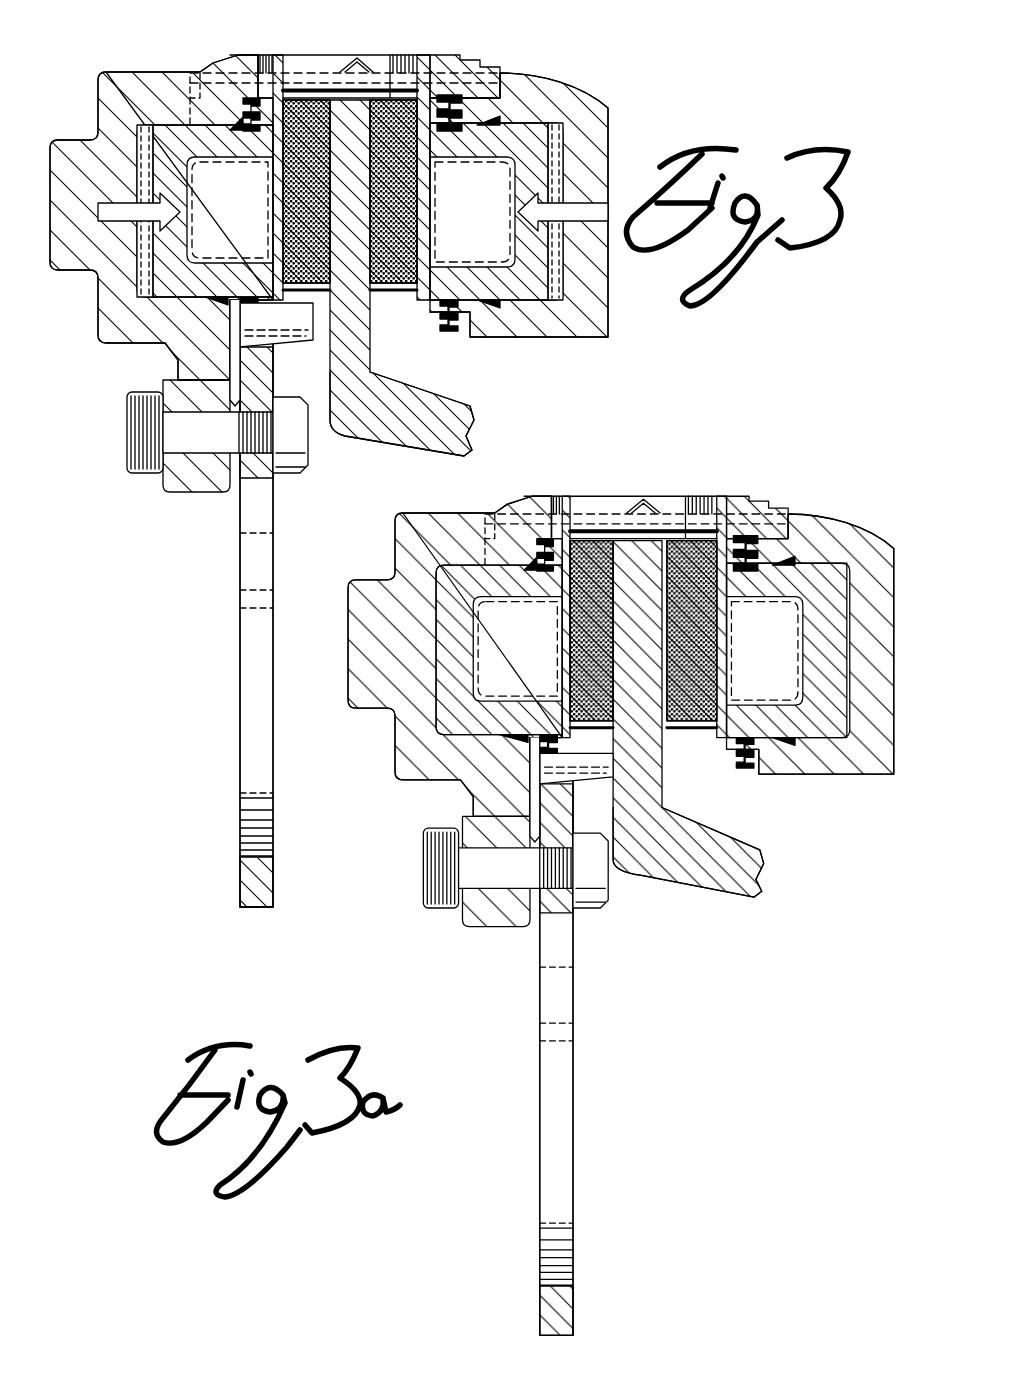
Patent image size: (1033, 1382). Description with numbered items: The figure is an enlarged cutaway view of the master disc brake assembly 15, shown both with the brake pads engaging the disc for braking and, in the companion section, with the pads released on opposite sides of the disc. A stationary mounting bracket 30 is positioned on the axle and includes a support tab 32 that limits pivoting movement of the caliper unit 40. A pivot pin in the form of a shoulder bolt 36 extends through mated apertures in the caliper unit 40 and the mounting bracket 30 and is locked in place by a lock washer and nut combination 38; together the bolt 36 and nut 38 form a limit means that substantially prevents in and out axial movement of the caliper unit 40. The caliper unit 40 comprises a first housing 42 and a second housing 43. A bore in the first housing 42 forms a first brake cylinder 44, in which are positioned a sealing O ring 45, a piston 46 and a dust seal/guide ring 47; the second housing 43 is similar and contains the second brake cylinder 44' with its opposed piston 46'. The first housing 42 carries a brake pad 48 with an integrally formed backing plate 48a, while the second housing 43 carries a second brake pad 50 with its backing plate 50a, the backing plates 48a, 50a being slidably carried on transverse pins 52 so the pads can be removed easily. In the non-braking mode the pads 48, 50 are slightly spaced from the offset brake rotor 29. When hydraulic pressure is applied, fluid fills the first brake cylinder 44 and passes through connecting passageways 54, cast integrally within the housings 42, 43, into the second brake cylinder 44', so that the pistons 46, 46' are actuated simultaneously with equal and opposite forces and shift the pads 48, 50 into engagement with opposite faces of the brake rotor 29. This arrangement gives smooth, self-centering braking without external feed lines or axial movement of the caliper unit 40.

In FIG. 3, the master disc brake assembly 15 is at (166, 650).
In FIG. 3A, the master disc brake assembly 15 is at (507, 1167).
In FIG. 3, the brake rotor 29 is at (378, 378).
In FIG. 3A, the brake rotor 29 is at (663, 810).
In FIG. 3, the mounting bracket 30 is at (248, 723).
In FIG. 3A, the mounting bracket 30 is at (565, 1074).
In FIG. 3, the support tab 32 is at (292, 315).
In FIG. 3A, the support tab 32 is at (584, 760).
In FIG. 3, the shoulder bolt 36 is at (192, 452).
In FIG. 3A, the shoulder bolt 36 is at (498, 892).
In FIG. 3, the lock washer and nut combination 38 is at (298, 473).
In FIG. 3A, the lock washer and nut combination 38 is at (597, 913).
In FIG. 3, the caliper unit 40 is at (116, 63).
In FIG. 3A, the caliper unit 40 is at (393, 517).
In FIG. 3, the first housing 42 is at (108, 86).
In FIG. 3A, the first housing 42 is at (392, 560).
In FIG. 3, the second housing 43 is at (575, 80).
In FIG. 3A, the second housing 43 is at (836, 520).
In FIG. 3, the first brake cylinder 44 is at (154, 244).
In FIG. 3, the second brake cylinder 44' is at (616, 241).
In FIG. 3, the sealing O ring 45 is at (497, 113).
In FIG. 3, the piston 46 is at (164, 260).
In FIG. 3A, the piston 46 is at (445, 754).
In FIG. 3, the piston 46' is at (523, 347).
In FIG. 3A, the piston 46' is at (792, 797).
In FIG. 3, the dust seal/guide ring 47 is at (480, 113).
In FIG. 3, the brake pad 48 is at (300, 100).
In FIG. 3A, the brake pad 48 is at (588, 520).
In FIG. 3, the backing plate 48a is at (262, 90).
In FIG. 3A, the backing plate 48a is at (565, 500).
In FIG. 3, the second brake pad 50 is at (393, 92).
In FIG. 3A, the second brake pad 50 is at (742, 525).
In FIG. 3, the backing plate 50a is at (427, 83).
In FIG. 3A, the backing plate 50a is at (725, 528).
In FIG. 3, the transverse pins 52 is at (205, 65).
In FIG. 3, the connecting passageways 54 is at (80, 236).
In FIG. 3A, the connecting passageways 54 is at (443, 626).